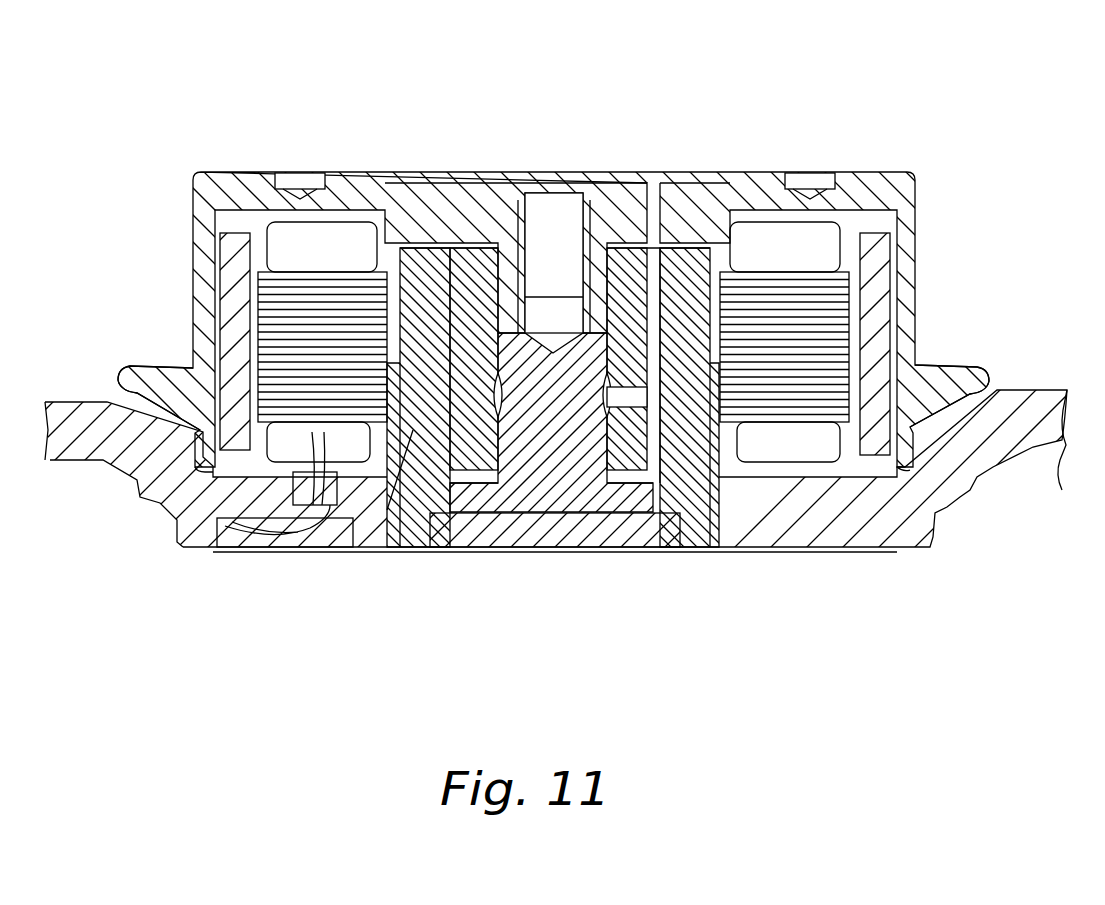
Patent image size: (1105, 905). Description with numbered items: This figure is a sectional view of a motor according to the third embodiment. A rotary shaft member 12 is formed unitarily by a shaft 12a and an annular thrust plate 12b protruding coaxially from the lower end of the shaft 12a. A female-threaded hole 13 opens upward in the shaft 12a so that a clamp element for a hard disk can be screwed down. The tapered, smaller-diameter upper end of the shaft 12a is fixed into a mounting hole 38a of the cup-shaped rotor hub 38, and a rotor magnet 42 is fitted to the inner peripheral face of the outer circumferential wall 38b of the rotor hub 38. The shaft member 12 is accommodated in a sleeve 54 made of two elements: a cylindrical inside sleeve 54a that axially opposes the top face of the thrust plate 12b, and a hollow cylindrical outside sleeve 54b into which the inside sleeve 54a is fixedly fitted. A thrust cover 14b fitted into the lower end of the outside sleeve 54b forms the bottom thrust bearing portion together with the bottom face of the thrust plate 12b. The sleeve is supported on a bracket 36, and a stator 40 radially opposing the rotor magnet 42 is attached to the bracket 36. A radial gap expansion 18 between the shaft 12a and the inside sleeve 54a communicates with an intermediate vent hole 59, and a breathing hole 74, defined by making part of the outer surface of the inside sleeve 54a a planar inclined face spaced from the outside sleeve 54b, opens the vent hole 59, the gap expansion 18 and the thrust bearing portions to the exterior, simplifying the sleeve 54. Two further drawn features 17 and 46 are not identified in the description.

The rotary shaft member 12 is at (507, 172).
The shaft 12a is at (496, 360).
The thrust plate 12b is at (500, 547).
The female-threaded hole 13 is at (541, 222).
The thrust cover 14b is at (600, 547).
The fluid bearing portion 17 is at (634, 300).
The radial gap expansion 18 is at (652, 262).
The bracket 36 is at (1033, 388).
The rotor hub 38 is at (860, 165).
The mounting hole 38a is at (596, 325).
The outer circumferential wall 38b is at (203, 307).
The stator 40 is at (293, 272).
The rotor magnet 42 is at (232, 258).
The flange 46 is at (920, 427).
The sleeve 54 is at (714, 256).
The inside sleeve 54a is at (400, 248).
The outside sleeve 54b is at (336, 540).
The intermediate vent hole 59 is at (647, 385).
The breathing hole 74 is at (733, 547).